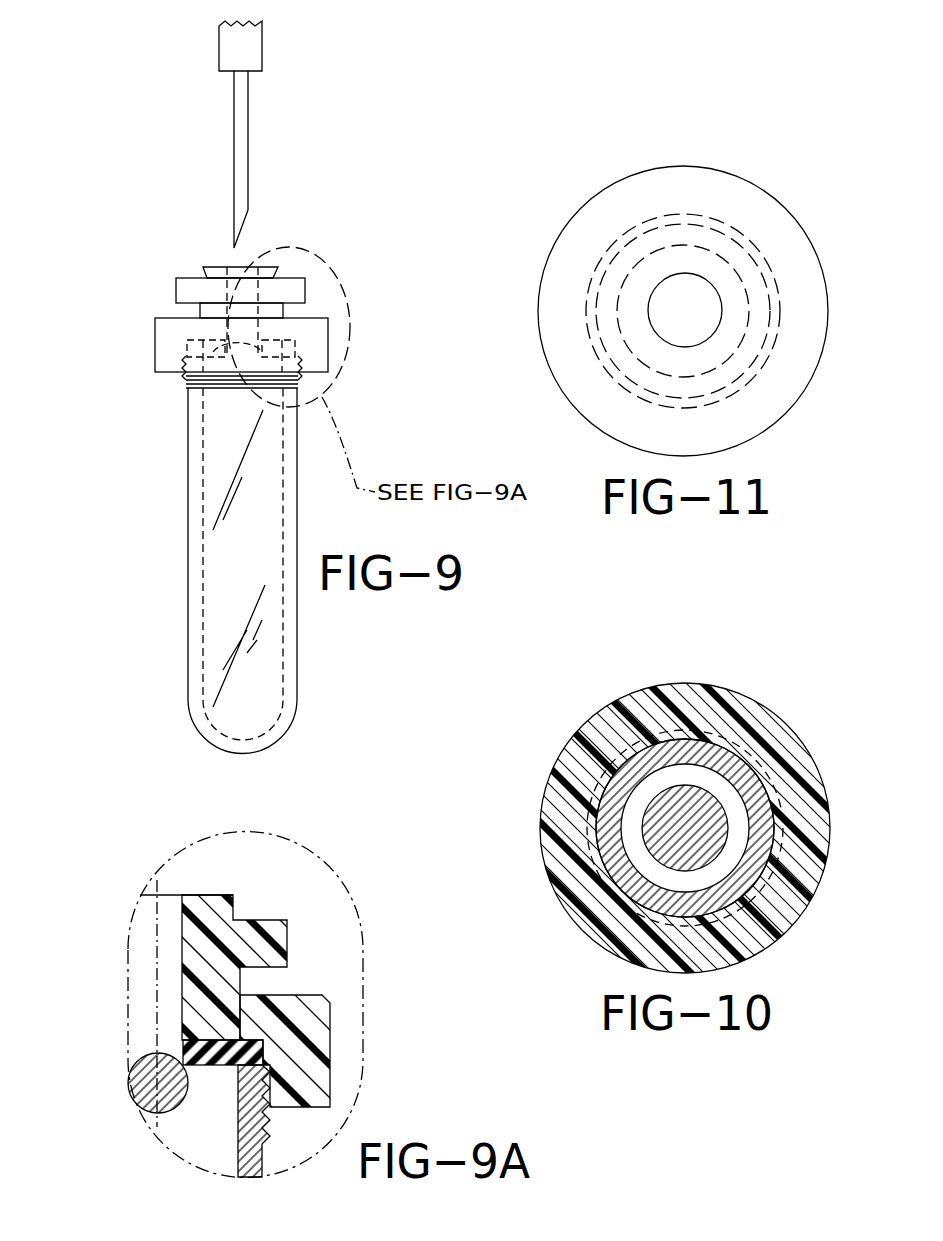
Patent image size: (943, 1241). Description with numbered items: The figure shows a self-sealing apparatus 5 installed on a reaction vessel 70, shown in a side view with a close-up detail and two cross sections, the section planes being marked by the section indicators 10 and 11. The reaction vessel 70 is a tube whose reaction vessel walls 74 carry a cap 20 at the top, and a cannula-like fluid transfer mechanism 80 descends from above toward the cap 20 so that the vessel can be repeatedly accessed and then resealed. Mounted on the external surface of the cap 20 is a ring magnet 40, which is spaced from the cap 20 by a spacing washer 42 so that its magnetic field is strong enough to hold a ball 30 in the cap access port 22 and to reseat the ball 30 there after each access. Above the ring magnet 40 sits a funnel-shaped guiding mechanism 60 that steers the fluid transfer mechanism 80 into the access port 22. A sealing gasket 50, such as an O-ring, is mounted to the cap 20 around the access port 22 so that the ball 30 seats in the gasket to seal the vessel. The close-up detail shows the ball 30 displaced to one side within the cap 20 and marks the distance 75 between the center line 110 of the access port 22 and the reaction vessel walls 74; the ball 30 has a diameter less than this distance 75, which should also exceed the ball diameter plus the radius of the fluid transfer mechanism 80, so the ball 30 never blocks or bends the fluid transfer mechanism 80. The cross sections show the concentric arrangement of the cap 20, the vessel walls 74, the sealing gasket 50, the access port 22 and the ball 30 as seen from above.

In FIG. 9, the apparatus 5 is at (171, 269).
In FIG. 9, the fluid transfer mechanism 80 is at (240, 128).
In FIG. 9, the guiding mechanism 60 is at (278, 276).
In FIG. 9, the ring magnet 40 is at (308, 297).
In FIG. 9, the spacing washer 42 is at (200, 310).
In FIG. 9, the cap 20 is at (333, 318).
In FIG. 11, the cap 20 is at (623, 178).
In FIG. 10, the cap 20 is at (623, 696).
In FIG. 9A, the cap 20 is at (321, 994).
In FIG. 11, the cap access port 22 is at (650, 332).
In FIG. 9A, the cap access port 22 is at (202, 948).
In FIG. 11, the sealing gasket 50 is at (703, 262).
In FIG. 9A, the sealing gasket 50 is at (225, 1040).
In FIG. 11, the reaction vessel walls 74 is at (641, 250).
In FIG. 10, the reaction vessel walls 74 is at (607, 847).
In FIG. 9A, the reaction vessel walls 74 is at (240, 1125).
In FIG. 9, the reaction vessel 70 is at (227, 600).
In FIG. 10, the ball 30 is at (709, 807).
In FIG. 9A, the ball 30 is at (147, 1092).
In FIG. 9A, the center line 110 is at (157, 1020).
In FIG. 9A, the distance 75 is at (238, 1177).
In FIG. 9, the section line 10- 10 is at (377, 360).
In FIG. 9, the section line 11- 11 is at (423, 322).